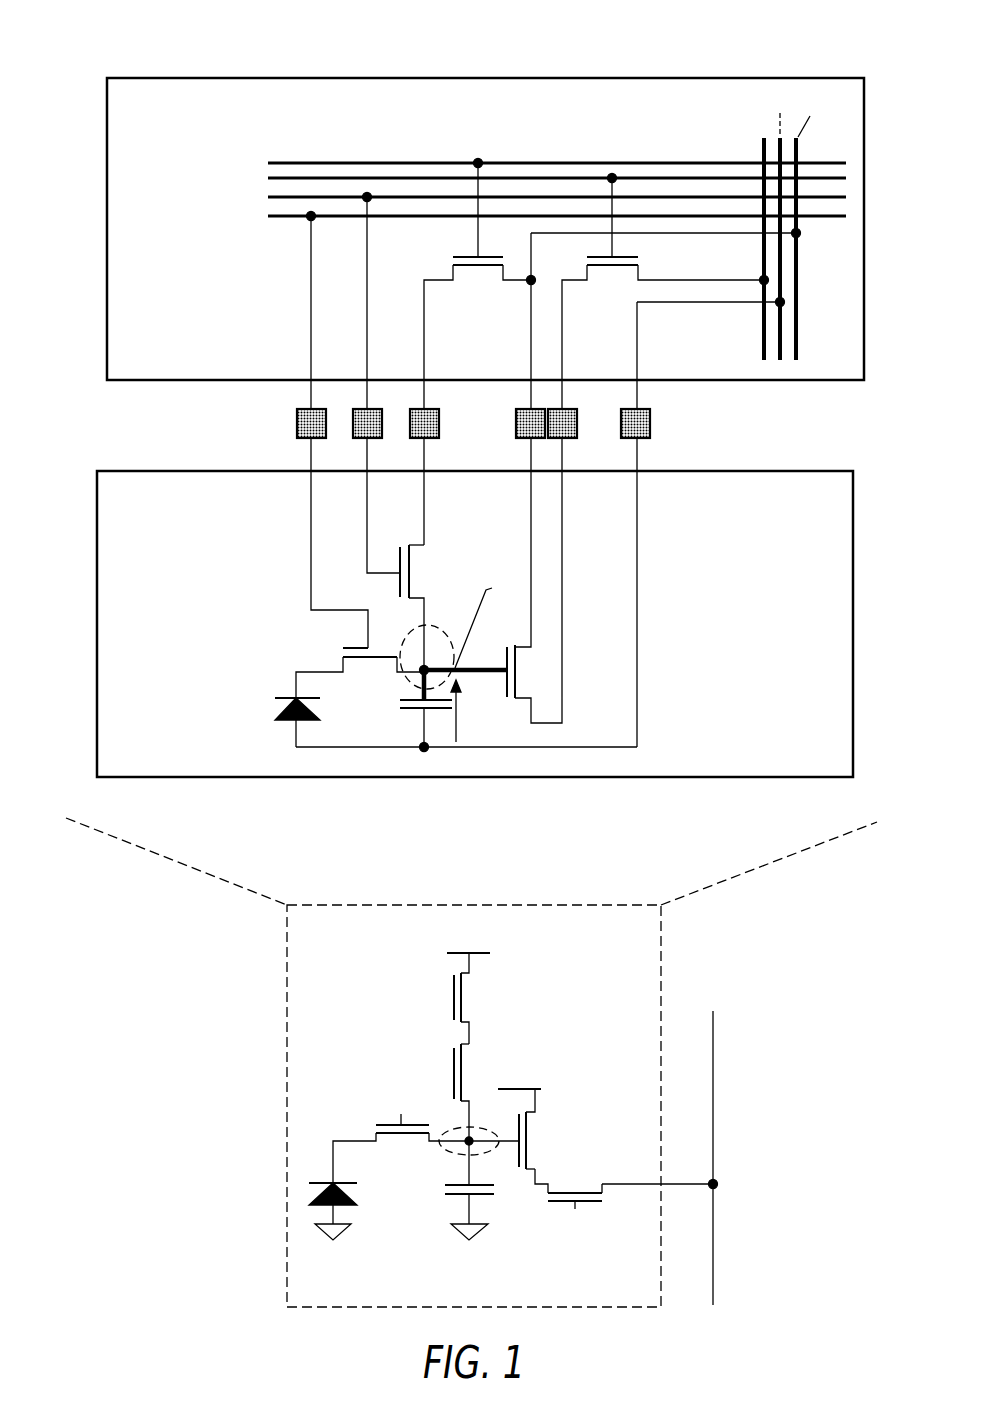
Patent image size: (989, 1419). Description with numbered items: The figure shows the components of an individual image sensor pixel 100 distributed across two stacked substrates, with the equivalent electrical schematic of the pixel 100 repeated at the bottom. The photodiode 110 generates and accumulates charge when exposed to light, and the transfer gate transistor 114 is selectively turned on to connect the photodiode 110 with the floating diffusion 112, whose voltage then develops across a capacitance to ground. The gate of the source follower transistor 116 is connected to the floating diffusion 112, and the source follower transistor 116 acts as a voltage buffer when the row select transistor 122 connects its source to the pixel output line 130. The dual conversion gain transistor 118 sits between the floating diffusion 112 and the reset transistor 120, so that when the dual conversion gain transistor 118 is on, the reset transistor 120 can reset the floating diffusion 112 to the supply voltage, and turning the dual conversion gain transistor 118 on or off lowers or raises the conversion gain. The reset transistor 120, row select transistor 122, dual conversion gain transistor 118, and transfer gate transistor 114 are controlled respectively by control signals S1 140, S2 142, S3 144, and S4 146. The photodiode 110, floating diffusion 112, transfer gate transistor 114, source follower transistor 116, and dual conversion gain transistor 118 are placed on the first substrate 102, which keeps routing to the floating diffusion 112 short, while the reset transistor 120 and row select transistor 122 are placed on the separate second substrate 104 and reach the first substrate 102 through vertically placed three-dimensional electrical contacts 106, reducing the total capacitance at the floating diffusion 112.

The pixel 100 is at (88, 60).
The first substrate 102 is at (224, 766).
The second substrate 104 is at (240, 369).
The three-dimensional electrical contact 106 is at (297, 436).
The photodiode 110 is at (275, 698).
The floating diffusion 112 is at (465, 945).
The transfer gate transistor 114 is at (348, 647).
The source follower transistor 116 is at (518, 688).
The dual conversion gain transistor 118 is at (410, 563).
The reset transistor 120 is at (477, 267).
The row select transistor 122 is at (625, 268).
The pixel output line 130 is at (717, 1156).
The control signal S1 140 is at (268, 162).
The control signal S2 142 is at (268, 178).
The control signal S3 144 is at (268, 197).
The control signal S4 146 is at (268, 215).